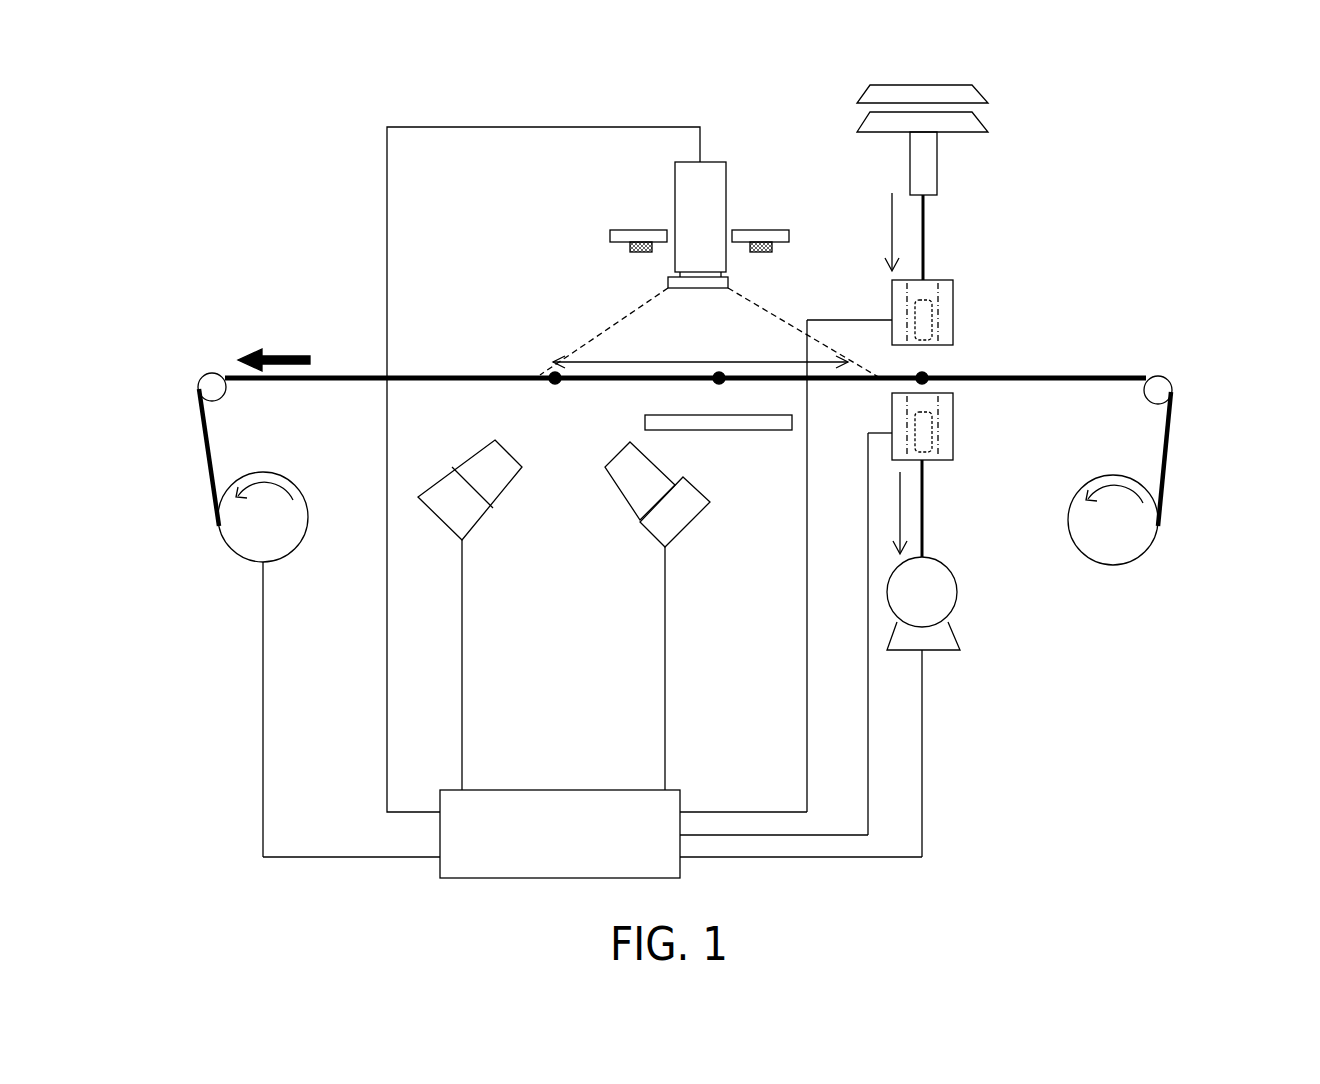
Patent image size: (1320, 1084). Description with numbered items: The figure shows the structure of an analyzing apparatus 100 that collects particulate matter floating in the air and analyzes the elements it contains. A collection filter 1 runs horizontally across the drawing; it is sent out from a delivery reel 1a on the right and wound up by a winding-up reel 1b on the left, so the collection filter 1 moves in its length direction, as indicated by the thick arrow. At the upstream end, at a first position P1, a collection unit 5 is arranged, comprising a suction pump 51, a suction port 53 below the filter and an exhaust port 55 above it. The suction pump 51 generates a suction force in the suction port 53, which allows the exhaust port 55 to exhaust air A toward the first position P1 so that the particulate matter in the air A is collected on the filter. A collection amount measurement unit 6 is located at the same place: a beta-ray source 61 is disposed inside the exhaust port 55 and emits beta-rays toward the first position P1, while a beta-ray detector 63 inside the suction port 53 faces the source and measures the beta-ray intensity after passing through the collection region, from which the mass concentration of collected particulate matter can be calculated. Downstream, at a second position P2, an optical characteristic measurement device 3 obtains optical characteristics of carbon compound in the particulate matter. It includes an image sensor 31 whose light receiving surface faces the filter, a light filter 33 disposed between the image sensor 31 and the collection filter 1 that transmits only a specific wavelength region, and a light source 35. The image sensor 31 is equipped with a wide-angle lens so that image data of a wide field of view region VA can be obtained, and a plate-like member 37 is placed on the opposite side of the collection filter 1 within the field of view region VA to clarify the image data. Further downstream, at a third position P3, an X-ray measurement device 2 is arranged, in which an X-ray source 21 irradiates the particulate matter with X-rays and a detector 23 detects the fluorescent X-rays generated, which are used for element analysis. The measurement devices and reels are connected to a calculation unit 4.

The analyzing apparatus 100 is at (1130, 108).
The collection filter 1 is at (1137, 373).
The delivery reel 1a is at (1115, 566).
The winding-up reel 1b is at (219, 538).
The X-ray measurement device 2 is at (564, 615).
The X-ray source 21 is at (488, 511).
The detector 23 is at (629, 490).
The optical characteristic measurement device 3 is at (633, 429).
The image sensor 31 is at (675, 178).
The light filter 33 is at (664, 285).
The light source 35 is at (629, 249).
The plate-like member 37 is at (752, 432).
The calculation unit 4 is at (562, 790).
The collection unit 5 is at (892, 471).
The suction pump 51 is at (960, 650).
The suction port 53 is at (936, 463).
The exhaust port 55 is at (926, 292).
The collection amount measurement unit 6 is at (892, 557).
The beta-ray source 61 is at (955, 322).
The beta-ray detector 63 is at (872, 613).
The first position P1 is at (919, 383).
The second position P2 is at (717, 394).
The third position P3 is at (553, 394).
The field of view region VA is at (700, 351).
The air A is at (1058, 95).